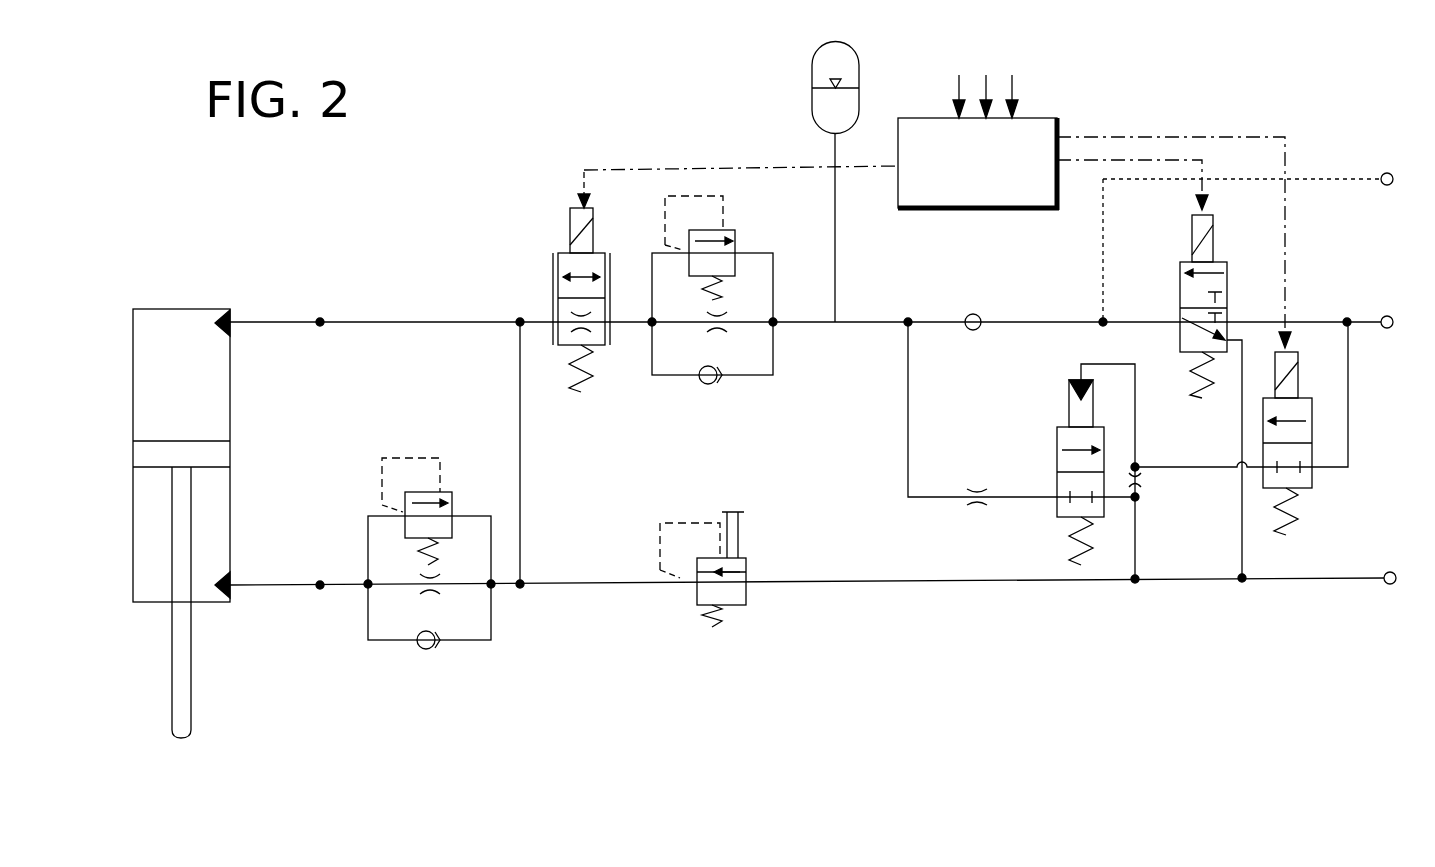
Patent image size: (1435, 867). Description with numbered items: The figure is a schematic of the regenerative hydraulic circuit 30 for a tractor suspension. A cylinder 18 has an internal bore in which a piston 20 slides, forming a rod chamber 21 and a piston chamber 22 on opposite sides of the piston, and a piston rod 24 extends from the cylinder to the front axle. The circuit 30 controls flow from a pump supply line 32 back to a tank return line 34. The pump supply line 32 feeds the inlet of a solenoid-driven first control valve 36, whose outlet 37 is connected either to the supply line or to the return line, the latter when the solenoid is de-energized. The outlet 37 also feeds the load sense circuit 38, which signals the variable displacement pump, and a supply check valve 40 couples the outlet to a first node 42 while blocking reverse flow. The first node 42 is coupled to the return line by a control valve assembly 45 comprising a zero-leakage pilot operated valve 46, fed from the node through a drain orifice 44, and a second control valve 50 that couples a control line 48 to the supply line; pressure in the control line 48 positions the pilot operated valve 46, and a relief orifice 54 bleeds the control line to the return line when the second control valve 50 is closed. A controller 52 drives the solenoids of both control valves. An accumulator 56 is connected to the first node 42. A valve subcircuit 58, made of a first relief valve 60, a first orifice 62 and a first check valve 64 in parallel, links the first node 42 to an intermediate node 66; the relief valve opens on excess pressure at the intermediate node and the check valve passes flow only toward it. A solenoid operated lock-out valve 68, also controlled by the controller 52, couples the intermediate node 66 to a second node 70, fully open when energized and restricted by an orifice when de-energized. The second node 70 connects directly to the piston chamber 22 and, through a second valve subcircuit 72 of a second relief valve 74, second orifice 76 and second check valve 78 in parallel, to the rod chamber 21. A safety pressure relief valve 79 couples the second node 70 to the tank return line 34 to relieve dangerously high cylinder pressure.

The cylinder 18 is at (232, 410).
The piston 20 is at (216, 453).
The rod chamber 21 is at (190, 512).
The piston chamber 22 is at (190, 368).
The piston rod 24 is at (183, 660).
The regenerative hydraulic circuit 30 is at (488, 240).
The pump supply line 32 is at (1367, 320).
The tank return line 34 is at (1356, 576).
The first control valve 36 is at (1229, 288).
The outlet 37 is at (1153, 321).
The load sense circuit 38 is at (1347, 178).
The supply check valve 40 is at (976, 314).
The first node 42 is at (831, 328).
The drain orifice 44 is at (981, 490).
The control valve assembly 45 is at (1042, 524).
The pilot operated valve 46 is at (1056, 452).
The control line 48 is at (1200, 466).
The second control valve 50 is at (1312, 478).
The controller 52 is at (956, 199).
The relief orifice 54 is at (1141, 480).
The accumulator 56 is at (812, 88).
The valve subcircuit 58 is at (678, 392).
The first relief valve 60 is at (722, 232).
The first orifice 62 is at (712, 312).
The first check valve 64 is at (711, 386).
The intermediate node 66 is at (650, 325).
The lock-out valve 68 is at (556, 258).
The second node 70 is at (522, 580).
The second valve subcircuit 72 is at (503, 638).
The second relief valve 74 is at (453, 497).
The second orifice 76 is at (431, 575).
The second check valve 78 is at (426, 650).
The safety pressure relief valve 79 is at (746, 566).